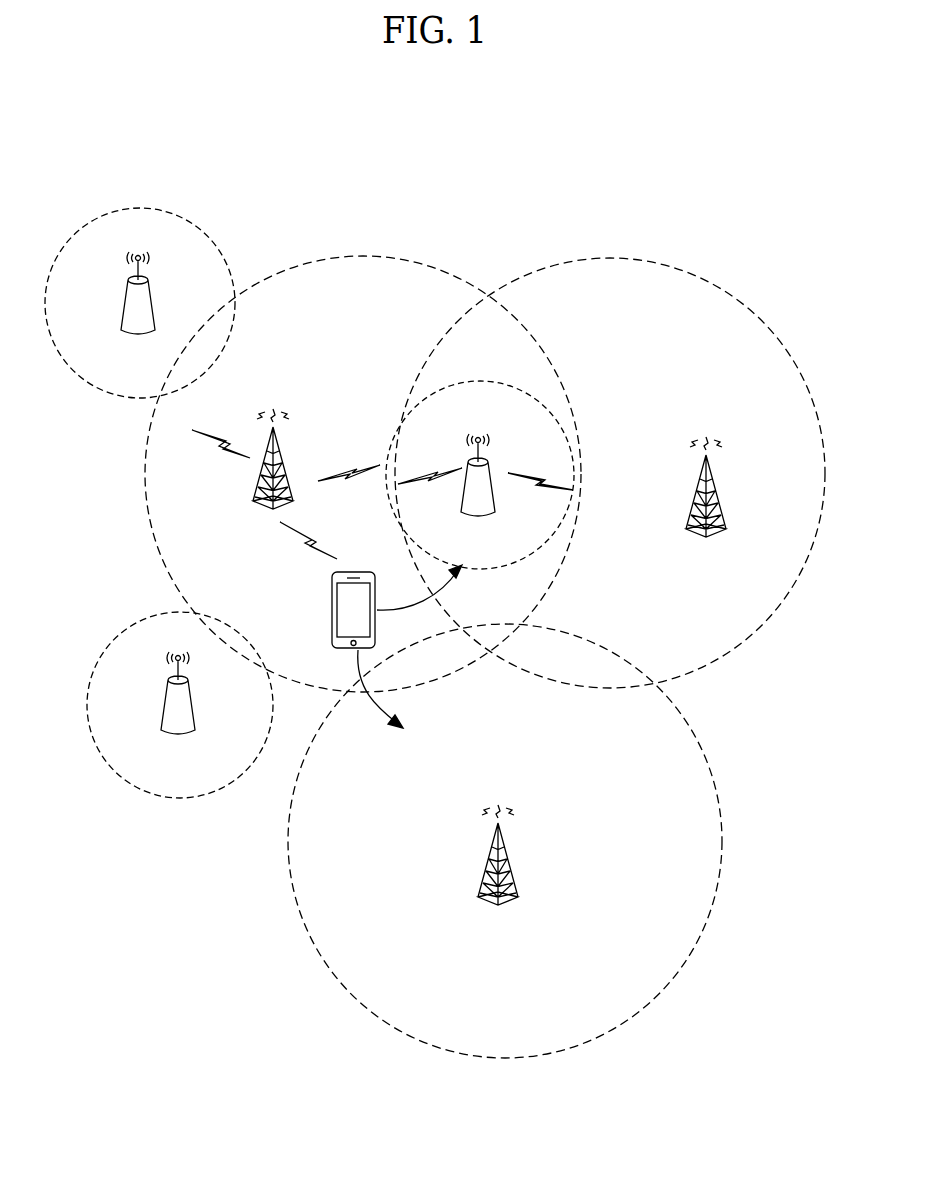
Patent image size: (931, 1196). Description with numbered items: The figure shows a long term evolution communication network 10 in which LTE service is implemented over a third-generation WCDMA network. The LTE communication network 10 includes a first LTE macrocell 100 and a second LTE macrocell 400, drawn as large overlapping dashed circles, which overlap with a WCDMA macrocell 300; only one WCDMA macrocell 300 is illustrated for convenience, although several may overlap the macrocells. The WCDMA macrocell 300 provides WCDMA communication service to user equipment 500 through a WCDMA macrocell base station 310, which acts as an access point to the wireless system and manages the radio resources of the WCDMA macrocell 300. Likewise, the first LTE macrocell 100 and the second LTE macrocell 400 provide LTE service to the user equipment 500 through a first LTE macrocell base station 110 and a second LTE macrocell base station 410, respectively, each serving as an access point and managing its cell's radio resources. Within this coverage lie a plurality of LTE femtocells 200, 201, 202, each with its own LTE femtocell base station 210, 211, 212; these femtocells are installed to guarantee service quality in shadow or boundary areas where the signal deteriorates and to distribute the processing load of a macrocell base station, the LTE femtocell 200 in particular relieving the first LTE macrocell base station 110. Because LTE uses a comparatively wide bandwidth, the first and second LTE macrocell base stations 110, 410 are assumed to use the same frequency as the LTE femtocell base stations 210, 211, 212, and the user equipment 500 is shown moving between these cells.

The LTE communication network 10 is at (177, 151).
The first LTE macrocell 100 is at (396, 262).
The first LTE macrocell base station 110 is at (287, 466).
The LTE femtocell 200 is at (486, 382).
The LTE femtocell 201 is at (188, 222).
The LTE femtocell 202 is at (122, 634).
The LTE femtocell base station 210 is at (494, 473).
The LTE femtocell base station 211 is at (152, 292).
The LTE femtocell base station 212 is at (192, 695).
The WCDMA macrocell 300 is at (672, 266).
The WCDMA macrocell base station 310 is at (720, 492).
The second LTE macrocell 400 is at (692, 730).
The second LTE macrocell base station 410 is at (511, 862).
The user equipment 500 is at (332, 616).